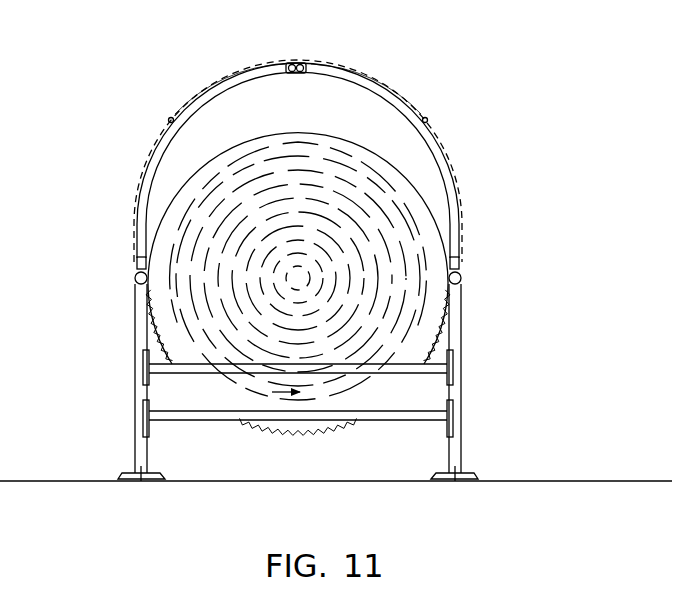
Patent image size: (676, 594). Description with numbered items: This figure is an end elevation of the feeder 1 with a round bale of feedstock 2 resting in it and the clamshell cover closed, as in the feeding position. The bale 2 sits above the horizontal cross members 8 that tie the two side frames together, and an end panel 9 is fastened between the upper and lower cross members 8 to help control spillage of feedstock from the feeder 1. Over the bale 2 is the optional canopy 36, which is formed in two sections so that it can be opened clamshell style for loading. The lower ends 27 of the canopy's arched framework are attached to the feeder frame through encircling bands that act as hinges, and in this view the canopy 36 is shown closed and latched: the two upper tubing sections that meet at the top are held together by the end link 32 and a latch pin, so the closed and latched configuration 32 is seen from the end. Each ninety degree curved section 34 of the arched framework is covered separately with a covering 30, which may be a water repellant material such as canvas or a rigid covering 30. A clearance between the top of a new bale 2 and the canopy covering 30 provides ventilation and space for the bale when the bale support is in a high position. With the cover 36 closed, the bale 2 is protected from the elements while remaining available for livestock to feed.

The feeder 1 is at (462, 340).
The bale of feedstock 2 is at (437, 219).
The horizontal cross members 8 is at (248, 364).
The end panel 9 is at (276, 393).
The lower ends of the canopy's arched framework 27 is at (140, 240).
The covering 30 is at (137, 190).
The end link 32 is at (298, 62).
The 90 degree curved section 34 is at (250, 64).
The canopy 36 is at (487, 158).